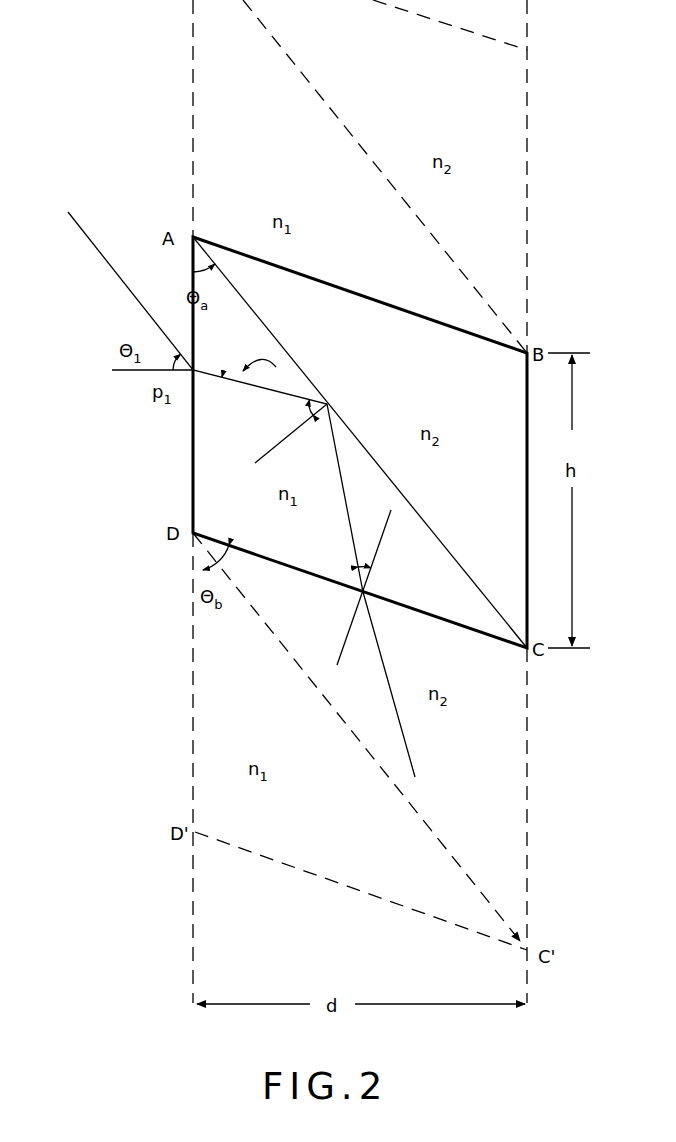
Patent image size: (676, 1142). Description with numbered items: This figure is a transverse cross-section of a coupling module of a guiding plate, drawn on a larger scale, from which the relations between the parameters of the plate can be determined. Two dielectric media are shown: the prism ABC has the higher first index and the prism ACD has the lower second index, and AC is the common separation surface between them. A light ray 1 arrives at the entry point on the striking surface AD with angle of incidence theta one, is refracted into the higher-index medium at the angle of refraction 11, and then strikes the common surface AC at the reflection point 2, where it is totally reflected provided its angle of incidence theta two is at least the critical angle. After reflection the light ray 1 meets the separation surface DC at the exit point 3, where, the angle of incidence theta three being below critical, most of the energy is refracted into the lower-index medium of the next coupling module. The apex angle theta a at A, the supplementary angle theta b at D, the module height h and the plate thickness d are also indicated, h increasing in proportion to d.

The light ray 1 is at (230, 481).
The refraction point p2 on surface AC 2 is at (306, 425).
The refraction point p3 on surface DC 3 is at (372, 587).
The refraction angle theta 11 is at (240, 359).